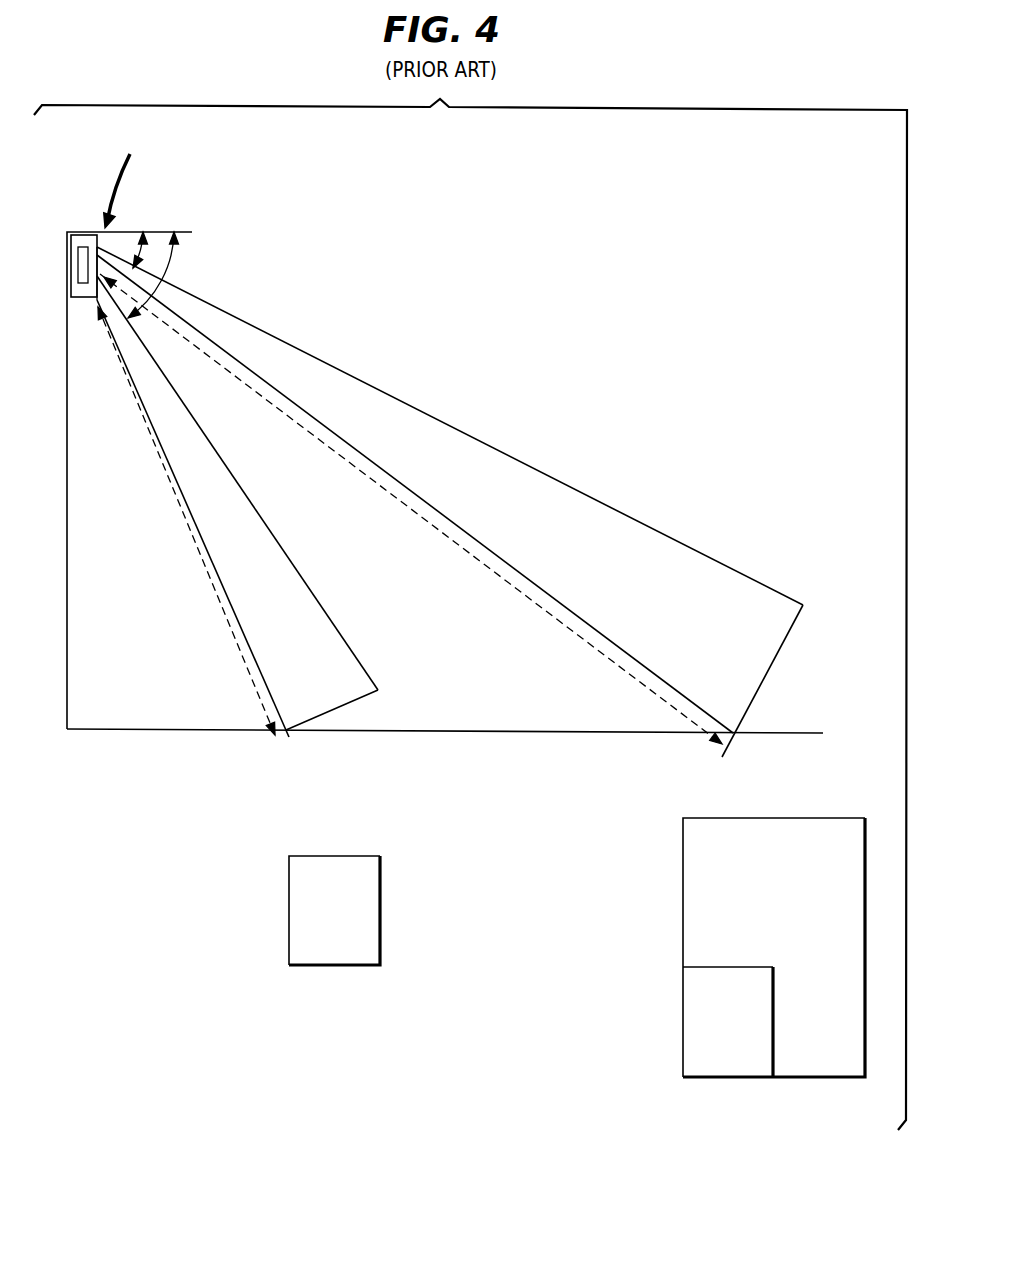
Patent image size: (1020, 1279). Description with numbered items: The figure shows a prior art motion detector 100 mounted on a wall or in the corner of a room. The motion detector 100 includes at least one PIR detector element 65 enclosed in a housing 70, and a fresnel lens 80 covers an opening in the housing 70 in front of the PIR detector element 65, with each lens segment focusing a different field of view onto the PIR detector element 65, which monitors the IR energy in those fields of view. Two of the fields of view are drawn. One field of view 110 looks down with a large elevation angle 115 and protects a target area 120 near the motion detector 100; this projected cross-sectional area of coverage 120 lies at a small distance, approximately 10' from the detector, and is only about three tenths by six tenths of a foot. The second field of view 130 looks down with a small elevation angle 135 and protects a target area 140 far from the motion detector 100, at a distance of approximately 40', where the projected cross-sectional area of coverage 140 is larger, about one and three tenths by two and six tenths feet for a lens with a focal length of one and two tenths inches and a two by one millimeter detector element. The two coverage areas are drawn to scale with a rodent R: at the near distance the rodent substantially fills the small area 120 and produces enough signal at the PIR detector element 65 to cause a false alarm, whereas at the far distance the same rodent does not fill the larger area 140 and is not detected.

The PIR detector element 65 is at (82, 262).
The housing 70 is at (80, 232).
The fresnel lens 80 is at (98, 246).
The motion detector 100 is at (126, 178).
The field of view 110 is at (303, 607).
The elevation angle 115 is at (168, 264).
The target area 120 is at (340, 710).
The second field of view 130 is at (547, 497).
The elevation angle 135 is at (140, 252).
The target area 140 is at (768, 672).
The distance of approximately ten feet 10' is at (186, 521).
The distance of approximately forty feet 40' is at (411, 509).